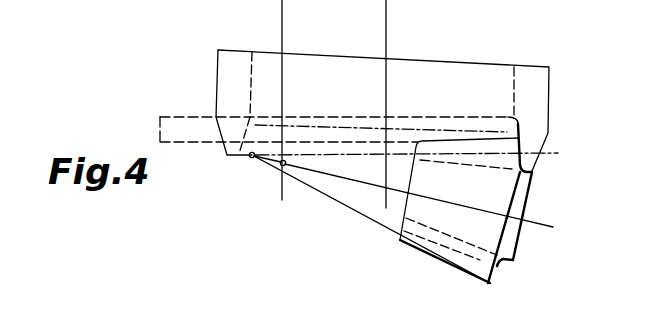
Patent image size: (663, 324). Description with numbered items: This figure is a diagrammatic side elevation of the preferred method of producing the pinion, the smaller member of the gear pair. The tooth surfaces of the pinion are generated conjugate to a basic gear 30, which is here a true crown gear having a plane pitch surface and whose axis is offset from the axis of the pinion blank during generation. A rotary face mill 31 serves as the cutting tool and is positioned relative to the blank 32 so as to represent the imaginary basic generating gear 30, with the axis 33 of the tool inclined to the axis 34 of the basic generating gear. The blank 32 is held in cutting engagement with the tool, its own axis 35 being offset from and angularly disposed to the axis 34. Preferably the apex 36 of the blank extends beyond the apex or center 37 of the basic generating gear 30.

The basic gear 30 is at (182, 133).
The face mill 31 is at (535, 113).
The blank 32 is at (476, 272).
The axis of the tool 33 is at (387, 30).
The axis of the basic generating gear 34 is at (283, 26).
The axis of the blank 35 is at (535, 220).
The apex of the blank 36 is at (250, 158).
The apex or center of the basic generating gear 37 is at (283, 167).